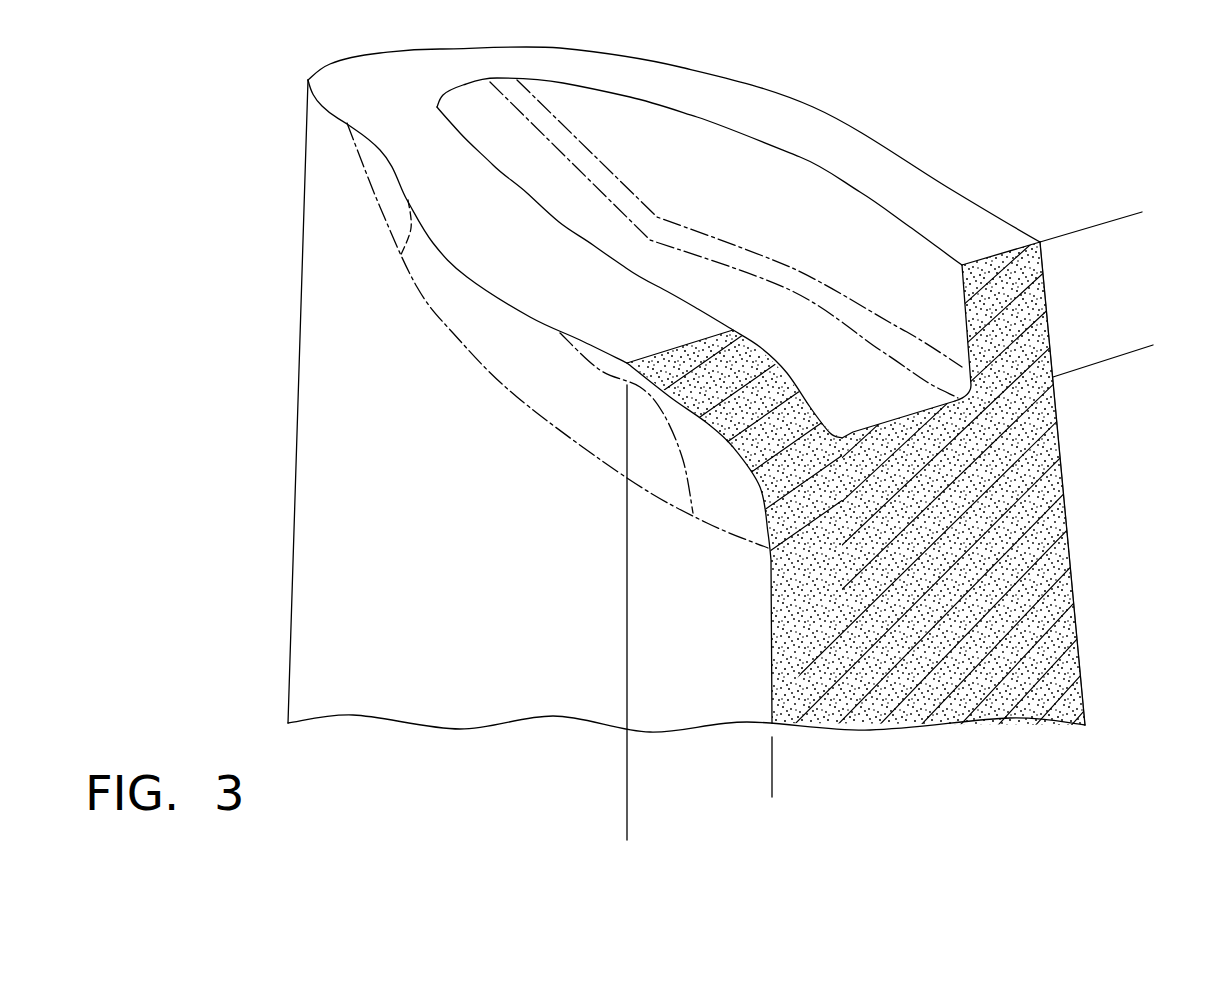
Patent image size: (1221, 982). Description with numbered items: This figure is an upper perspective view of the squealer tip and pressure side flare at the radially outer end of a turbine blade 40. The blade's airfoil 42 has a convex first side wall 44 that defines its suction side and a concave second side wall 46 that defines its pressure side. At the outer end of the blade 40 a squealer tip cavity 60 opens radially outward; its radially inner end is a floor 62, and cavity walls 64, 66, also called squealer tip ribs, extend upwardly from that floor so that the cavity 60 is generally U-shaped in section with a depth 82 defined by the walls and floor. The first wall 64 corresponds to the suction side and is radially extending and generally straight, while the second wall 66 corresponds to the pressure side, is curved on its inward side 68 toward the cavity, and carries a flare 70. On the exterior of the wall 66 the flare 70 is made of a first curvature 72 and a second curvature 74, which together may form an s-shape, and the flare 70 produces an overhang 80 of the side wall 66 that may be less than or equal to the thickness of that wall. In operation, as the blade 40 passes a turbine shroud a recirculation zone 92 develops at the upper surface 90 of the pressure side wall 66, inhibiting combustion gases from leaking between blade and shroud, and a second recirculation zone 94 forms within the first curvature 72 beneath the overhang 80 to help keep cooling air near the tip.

The blade 40 is at (1040, 103).
The airfoil 42 is at (1122, 408).
The first side wall 44 is at (1060, 463).
The second side wall 46 is at (402, 605).
The squealer tip cavity 60 is at (913, 327).
The floor 62 is at (737, 300).
The first cavity wall 64 is at (897, 195).
The second cavity wall 66 is at (817, 398).
The inward side 68 is at (773, 360).
The flare 70 is at (755, 325).
The first curvature 72 is at (748, 488).
The second curvature 74 is at (657, 403).
The overhang 80 is at (627, 818).
The depth 82 is at (1146, 345).
The upper surface 90 is at (470, 197).
The recirculation zone 92 is at (523, 250).
The second recirculation zone 94 is at (667, 472).